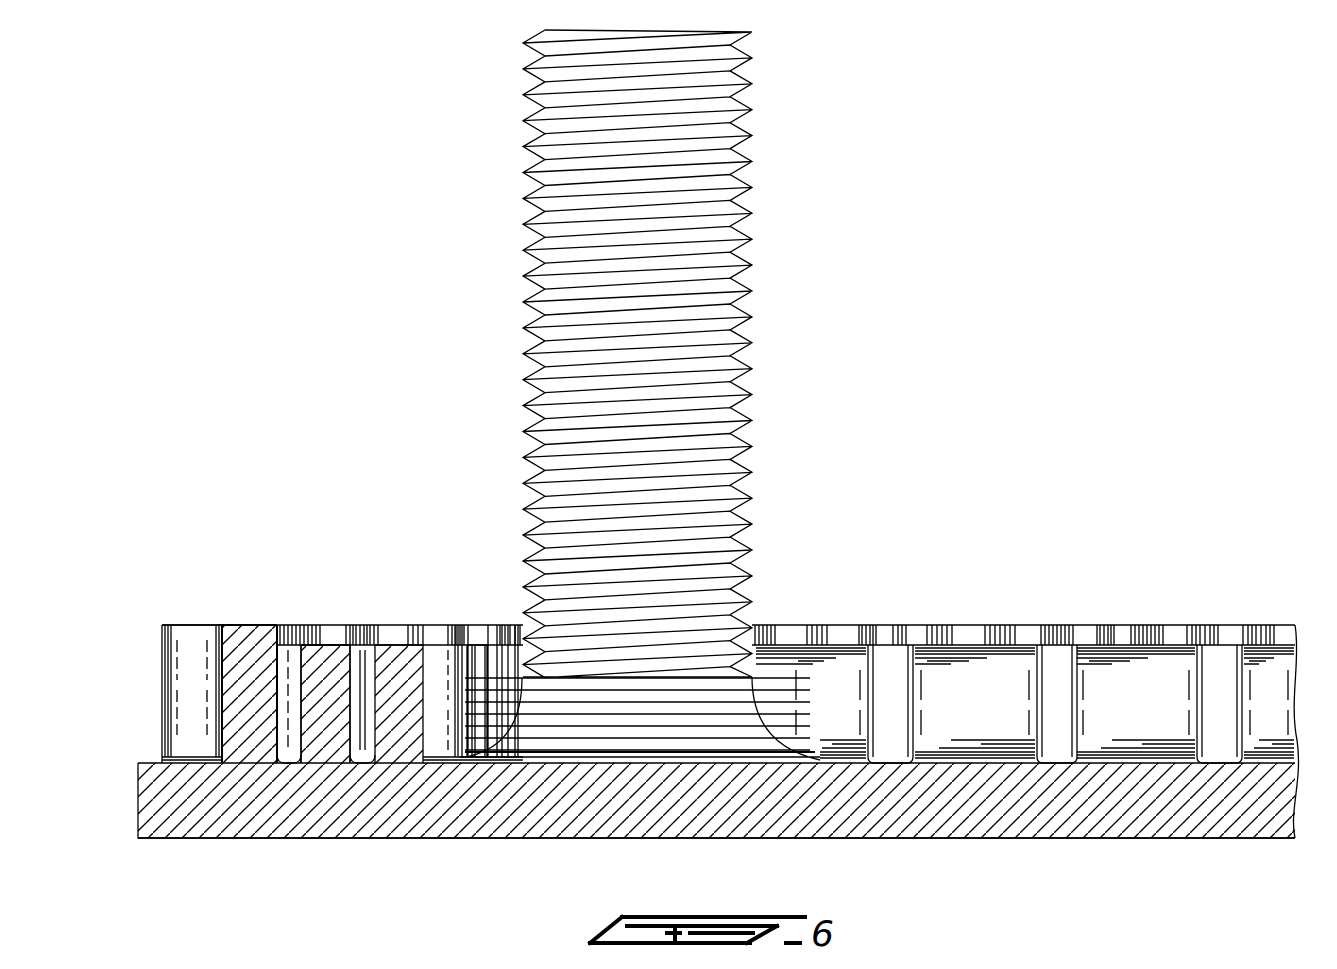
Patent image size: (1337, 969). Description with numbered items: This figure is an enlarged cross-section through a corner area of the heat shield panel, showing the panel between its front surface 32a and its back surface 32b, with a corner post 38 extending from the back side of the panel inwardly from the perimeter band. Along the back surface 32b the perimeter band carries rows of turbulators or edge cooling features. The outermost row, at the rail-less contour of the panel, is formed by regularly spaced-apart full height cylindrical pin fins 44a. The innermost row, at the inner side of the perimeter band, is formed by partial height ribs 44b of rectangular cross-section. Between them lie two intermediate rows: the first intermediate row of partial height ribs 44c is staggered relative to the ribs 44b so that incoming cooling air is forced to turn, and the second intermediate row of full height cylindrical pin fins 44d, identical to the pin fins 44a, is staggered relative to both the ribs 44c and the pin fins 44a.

The corner post 38 is at (642, 173).
The full height pin fins 44a is at (190, 640).
The partial height ribs 44b is at (398, 730).
The partial height ribs 44c is at (325, 672).
The full height cylindrical pin fins 44d is at (248, 648).
The front surface 32a is at (1100, 838).
The back surface 32b is at (948, 756).